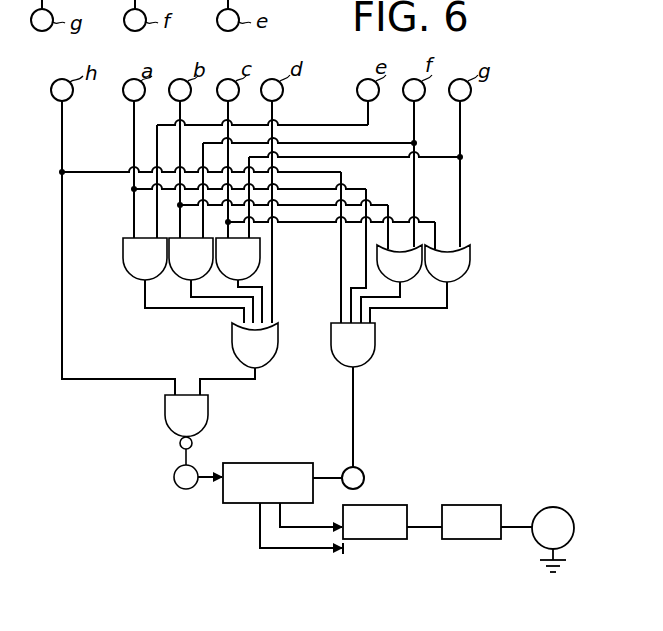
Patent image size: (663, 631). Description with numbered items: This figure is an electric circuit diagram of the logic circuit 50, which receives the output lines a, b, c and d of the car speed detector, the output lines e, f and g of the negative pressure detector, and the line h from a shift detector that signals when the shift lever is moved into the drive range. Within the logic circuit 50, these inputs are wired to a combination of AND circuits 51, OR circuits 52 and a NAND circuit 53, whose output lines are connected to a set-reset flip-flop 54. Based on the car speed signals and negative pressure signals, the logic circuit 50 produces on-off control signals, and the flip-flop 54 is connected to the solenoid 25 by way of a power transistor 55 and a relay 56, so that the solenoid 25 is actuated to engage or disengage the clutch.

The logic circuit 50 is at (470, 190).
The AND circuits 51 is at (187, 283).
The OR circuits 52 is at (235, 348).
The NAND circuit 53 is at (170, 421).
The set-reset flip-flop 54 is at (258, 463).
The power transistor 55 is at (378, 505).
The relay 56 is at (472, 505).
The solenoid 25 is at (558, 508).